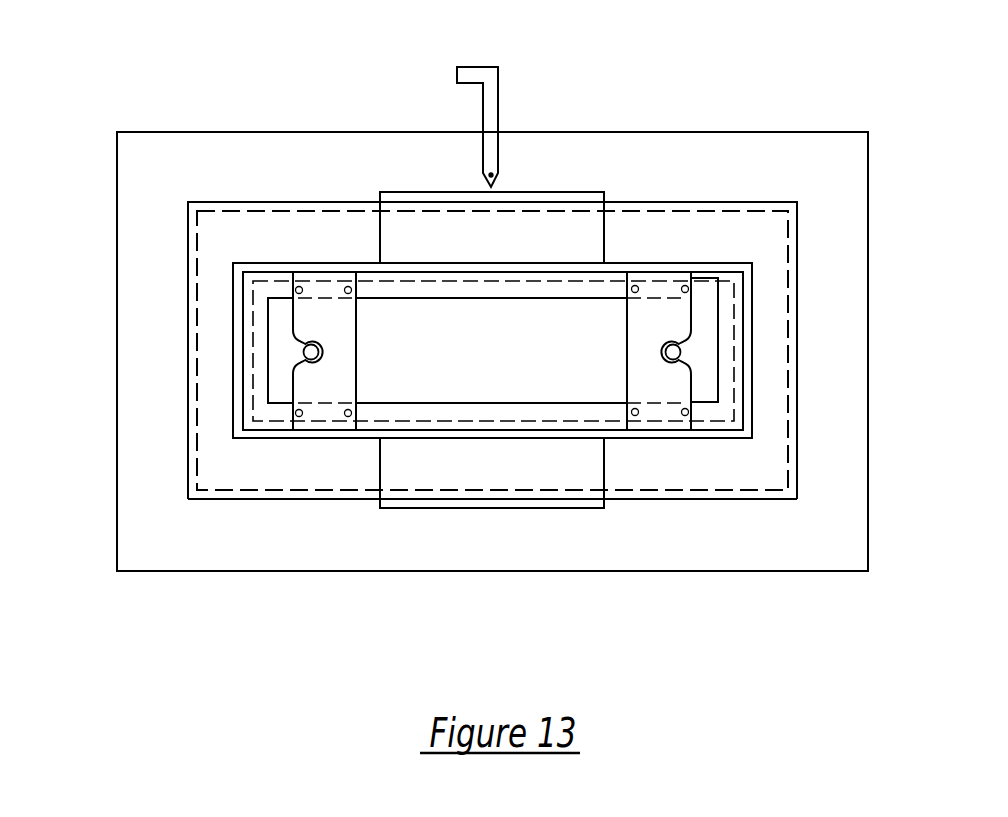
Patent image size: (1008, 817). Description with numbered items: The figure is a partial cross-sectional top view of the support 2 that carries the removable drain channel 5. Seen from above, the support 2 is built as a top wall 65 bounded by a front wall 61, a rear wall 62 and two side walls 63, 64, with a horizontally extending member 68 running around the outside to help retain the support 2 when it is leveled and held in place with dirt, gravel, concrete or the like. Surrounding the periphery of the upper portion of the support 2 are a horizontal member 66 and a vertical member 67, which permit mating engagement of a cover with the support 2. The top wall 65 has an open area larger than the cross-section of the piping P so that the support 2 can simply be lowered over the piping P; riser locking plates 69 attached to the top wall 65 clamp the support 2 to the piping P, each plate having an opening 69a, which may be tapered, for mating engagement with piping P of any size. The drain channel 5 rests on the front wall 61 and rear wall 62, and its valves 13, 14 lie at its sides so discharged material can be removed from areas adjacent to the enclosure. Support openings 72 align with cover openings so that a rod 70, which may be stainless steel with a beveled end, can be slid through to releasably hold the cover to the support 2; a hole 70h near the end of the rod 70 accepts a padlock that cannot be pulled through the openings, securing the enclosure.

The support 2 is at (110, 85).
The drain channel 5 is at (508, 365).
The valve 13 is at (428, 192).
The valve 14 is at (470, 512).
The front wall 61 is at (270, 507).
The rear wall 62 is at (265, 198).
The side wall 63 is at (186, 318).
The side wall 64 is at (802, 440).
The top wall 65 is at (607, 296).
The horizontal member 66 is at (208, 249).
The vertical member 67 is at (754, 322).
The horizontal extending member 68 is at (136, 556).
The riser locking plate 69 is at (313, 397).
The opening 69a is at (682, 330).
The rod 70 is at (500, 82).
The hole 70h is at (493, 173).
The support opening 72 is at (498, 262).
The piping P is at (299, 352).